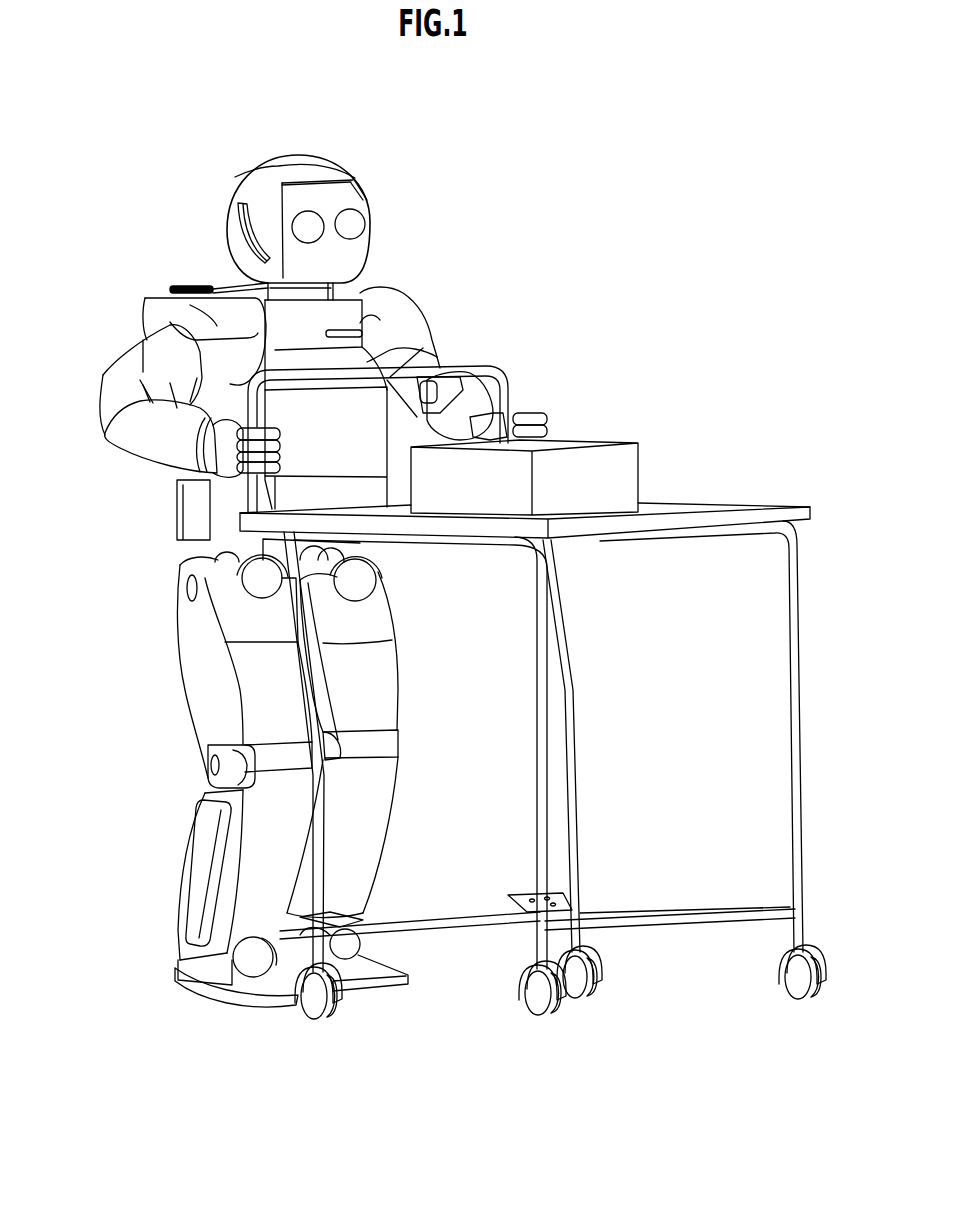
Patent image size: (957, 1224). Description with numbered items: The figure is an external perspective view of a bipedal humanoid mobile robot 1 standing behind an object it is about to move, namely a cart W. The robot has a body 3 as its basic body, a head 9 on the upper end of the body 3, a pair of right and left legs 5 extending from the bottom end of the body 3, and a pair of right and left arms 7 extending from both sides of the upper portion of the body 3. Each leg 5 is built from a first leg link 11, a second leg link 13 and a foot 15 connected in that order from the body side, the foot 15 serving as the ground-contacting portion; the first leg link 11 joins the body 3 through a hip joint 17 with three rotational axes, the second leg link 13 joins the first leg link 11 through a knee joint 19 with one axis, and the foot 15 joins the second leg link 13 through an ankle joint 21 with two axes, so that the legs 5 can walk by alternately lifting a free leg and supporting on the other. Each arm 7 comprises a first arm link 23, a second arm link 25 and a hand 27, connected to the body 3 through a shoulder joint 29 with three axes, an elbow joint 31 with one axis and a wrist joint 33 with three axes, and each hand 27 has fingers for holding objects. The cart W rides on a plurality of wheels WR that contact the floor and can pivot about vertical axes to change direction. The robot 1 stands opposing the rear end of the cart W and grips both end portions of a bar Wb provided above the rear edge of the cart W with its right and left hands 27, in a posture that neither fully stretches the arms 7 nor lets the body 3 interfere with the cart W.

The mobile robot 1 is at (449, 200).
The body 3 is at (392, 460).
The leg 5 is at (172, 682).
The arm 7 is at (446, 345).
The head 9 is at (312, 154).
The first leg link 11 is at (190, 640).
The second leg link 13 is at (187, 875).
The foot 15 is at (237, 993).
The hip joint 17 is at (178, 562).
The knee joint 19 is at (197, 780).
The ankle joint 21 is at (168, 960).
The first arm link 23 is at (127, 352).
The second arm link 25 is at (135, 445).
The hand 27 is at (217, 460).
The shoulder joint 29 is at (166, 298).
The elbow joint 31 is at (92, 398).
The wrist joint 33 is at (213, 482).
The cart (object) W is at (807, 663).
The bar Wb is at (367, 370).
The wheels WR is at (316, 1014).